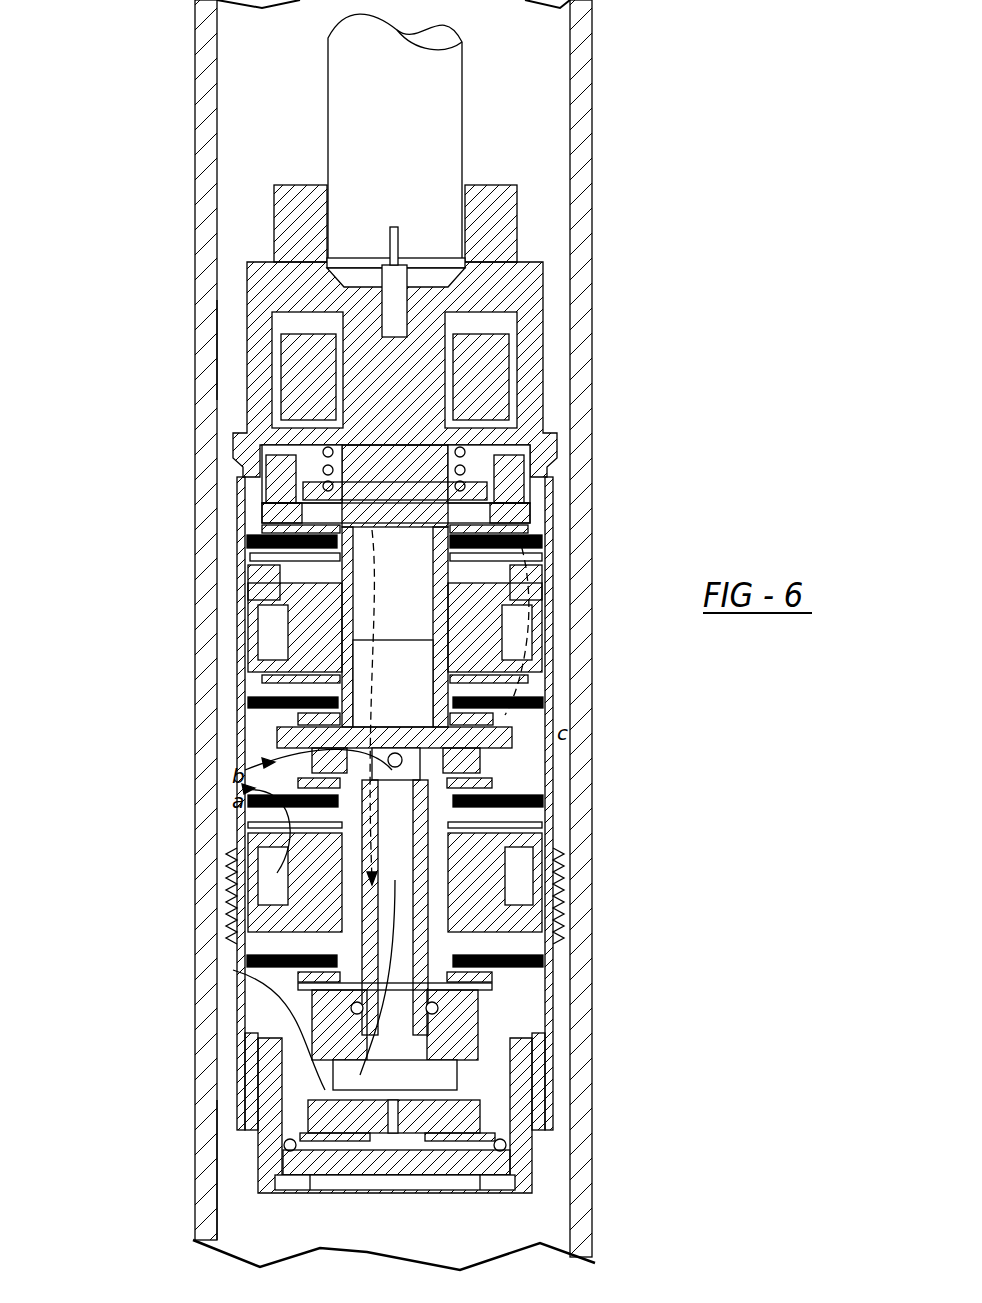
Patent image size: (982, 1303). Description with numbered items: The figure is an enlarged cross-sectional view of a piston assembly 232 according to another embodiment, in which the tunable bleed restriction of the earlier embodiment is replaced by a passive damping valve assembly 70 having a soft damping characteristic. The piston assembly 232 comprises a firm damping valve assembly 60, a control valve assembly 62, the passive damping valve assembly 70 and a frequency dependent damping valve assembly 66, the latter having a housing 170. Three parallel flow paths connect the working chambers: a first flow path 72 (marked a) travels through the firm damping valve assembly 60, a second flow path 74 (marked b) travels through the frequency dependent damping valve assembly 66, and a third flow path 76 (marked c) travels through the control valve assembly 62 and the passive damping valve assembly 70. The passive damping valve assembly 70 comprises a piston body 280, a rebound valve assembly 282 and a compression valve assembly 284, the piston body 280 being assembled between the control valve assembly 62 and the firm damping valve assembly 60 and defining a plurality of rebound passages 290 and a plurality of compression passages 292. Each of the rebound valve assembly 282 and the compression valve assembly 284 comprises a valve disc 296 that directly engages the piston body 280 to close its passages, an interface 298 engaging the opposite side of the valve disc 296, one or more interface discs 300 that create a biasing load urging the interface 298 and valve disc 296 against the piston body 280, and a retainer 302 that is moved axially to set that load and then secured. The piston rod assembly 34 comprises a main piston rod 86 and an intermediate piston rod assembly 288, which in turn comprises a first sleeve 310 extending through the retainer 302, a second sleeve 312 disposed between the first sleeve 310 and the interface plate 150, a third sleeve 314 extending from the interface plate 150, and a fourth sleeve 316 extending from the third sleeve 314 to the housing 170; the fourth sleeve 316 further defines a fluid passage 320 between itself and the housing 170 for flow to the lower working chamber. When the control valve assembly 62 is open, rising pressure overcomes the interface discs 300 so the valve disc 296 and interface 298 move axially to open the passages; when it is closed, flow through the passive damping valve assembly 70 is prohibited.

The piston rod assembly 34 is at (409, 100).
The firm damping valve assembly 60 is at (624, 910).
The control valve assembly 62 is at (556, 345).
The frequency dependent damping valve assembly 66 is at (238, 1156).
The passive damping valve assembly 70 is at (212, 607).
The first flow path 72 is at (350, 872).
The second flow path 74 is at (225, 985).
The third flow path 76 is at (380, 703).
The main piston rod 86 is at (410, 160).
The interface plate 150 is at (463, 752).
The housing 170 is at (518, 1066).
The piston assembly 232 is at (178, 346).
The piston body 280 is at (540, 640).
The rebound valve assembly 282 is at (226, 741).
The compression valve assembly 284 is at (560, 530).
The intermediate piston rod assembly 288 is at (505, 703).
The rebound passages 290 is at (273, 640).
The compression passages 292 is at (487, 620).
The valve disc 296 is at (285, 572).
The interface 298 is at (300, 548).
The interface discs 300 is at (345, 535).
The retainer 302 is at (375, 522).
The first sleeve 310 is at (540, 503).
The second sleeve 312 is at (345, 660).
The third sleeve 314 is at (345, 828).
The fourth sleeve 316 is at (330, 986).
The fluid passage 320 is at (335, 1050).